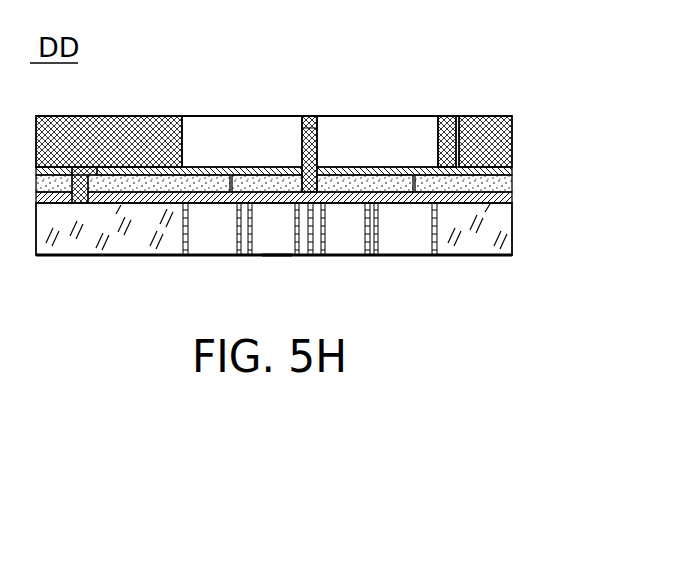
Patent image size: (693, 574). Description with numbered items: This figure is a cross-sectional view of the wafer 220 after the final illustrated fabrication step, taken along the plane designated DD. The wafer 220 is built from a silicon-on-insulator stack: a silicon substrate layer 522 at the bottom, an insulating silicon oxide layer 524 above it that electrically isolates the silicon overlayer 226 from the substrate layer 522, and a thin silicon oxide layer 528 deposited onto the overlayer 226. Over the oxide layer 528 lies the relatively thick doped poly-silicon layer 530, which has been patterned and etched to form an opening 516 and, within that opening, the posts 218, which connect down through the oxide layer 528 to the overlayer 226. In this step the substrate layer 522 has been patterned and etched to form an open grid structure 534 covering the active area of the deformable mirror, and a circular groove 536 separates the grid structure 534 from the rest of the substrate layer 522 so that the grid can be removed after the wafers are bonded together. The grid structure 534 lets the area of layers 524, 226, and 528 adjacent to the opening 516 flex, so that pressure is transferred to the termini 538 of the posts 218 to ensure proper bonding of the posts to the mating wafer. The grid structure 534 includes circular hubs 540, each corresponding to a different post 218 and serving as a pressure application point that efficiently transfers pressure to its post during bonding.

The opening 516 is at (238, 84).
The terminus of post 538 is at (308, 106).
The post 218 is at (318, 138).
The doped poly-silicon layer 530 is at (513, 114).
The silicon oxide layer 528 is at (513, 170).
The overlayer 226 is at (512, 183).
The insulating silicon oxide layer 524 is at (512, 195).
The substrate layer 522 is at (511, 232).
The wafer 220 is at (593, 100).
The circular groove 536 is at (182, 266).
The open grid structure 534 is at (278, 256).
The circular hub 540 is at (312, 268).